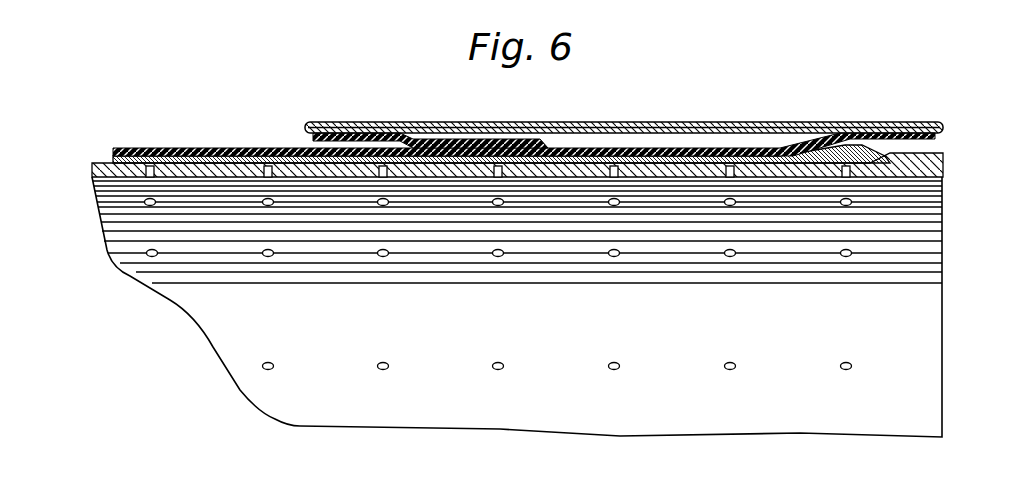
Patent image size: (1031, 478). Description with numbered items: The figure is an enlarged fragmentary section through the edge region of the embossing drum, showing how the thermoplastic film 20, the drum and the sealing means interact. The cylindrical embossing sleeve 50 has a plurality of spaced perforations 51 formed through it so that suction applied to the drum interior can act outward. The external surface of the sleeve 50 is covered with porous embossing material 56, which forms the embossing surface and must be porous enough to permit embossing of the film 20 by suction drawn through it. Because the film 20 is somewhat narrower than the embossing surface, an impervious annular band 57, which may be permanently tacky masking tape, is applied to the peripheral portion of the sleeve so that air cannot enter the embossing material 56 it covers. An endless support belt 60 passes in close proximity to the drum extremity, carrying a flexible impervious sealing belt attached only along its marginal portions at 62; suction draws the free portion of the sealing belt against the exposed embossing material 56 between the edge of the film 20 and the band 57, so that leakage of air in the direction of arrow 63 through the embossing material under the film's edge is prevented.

The thermoplastic film 20 is at (487, 148).
The cylindrical embossing sleeve 50 is at (233, 333).
The perforations 51 is at (381, 177).
The porous embossing material 56 is at (113, 160).
The impervious annular bands 57 is at (517, 165).
The endless support belts 60 is at (778, 128).
The marginal attachment of sealing belt to support belt 62 is at (349, 141).
The arrow indicating direction of air leakage 63 is at (527, 161).